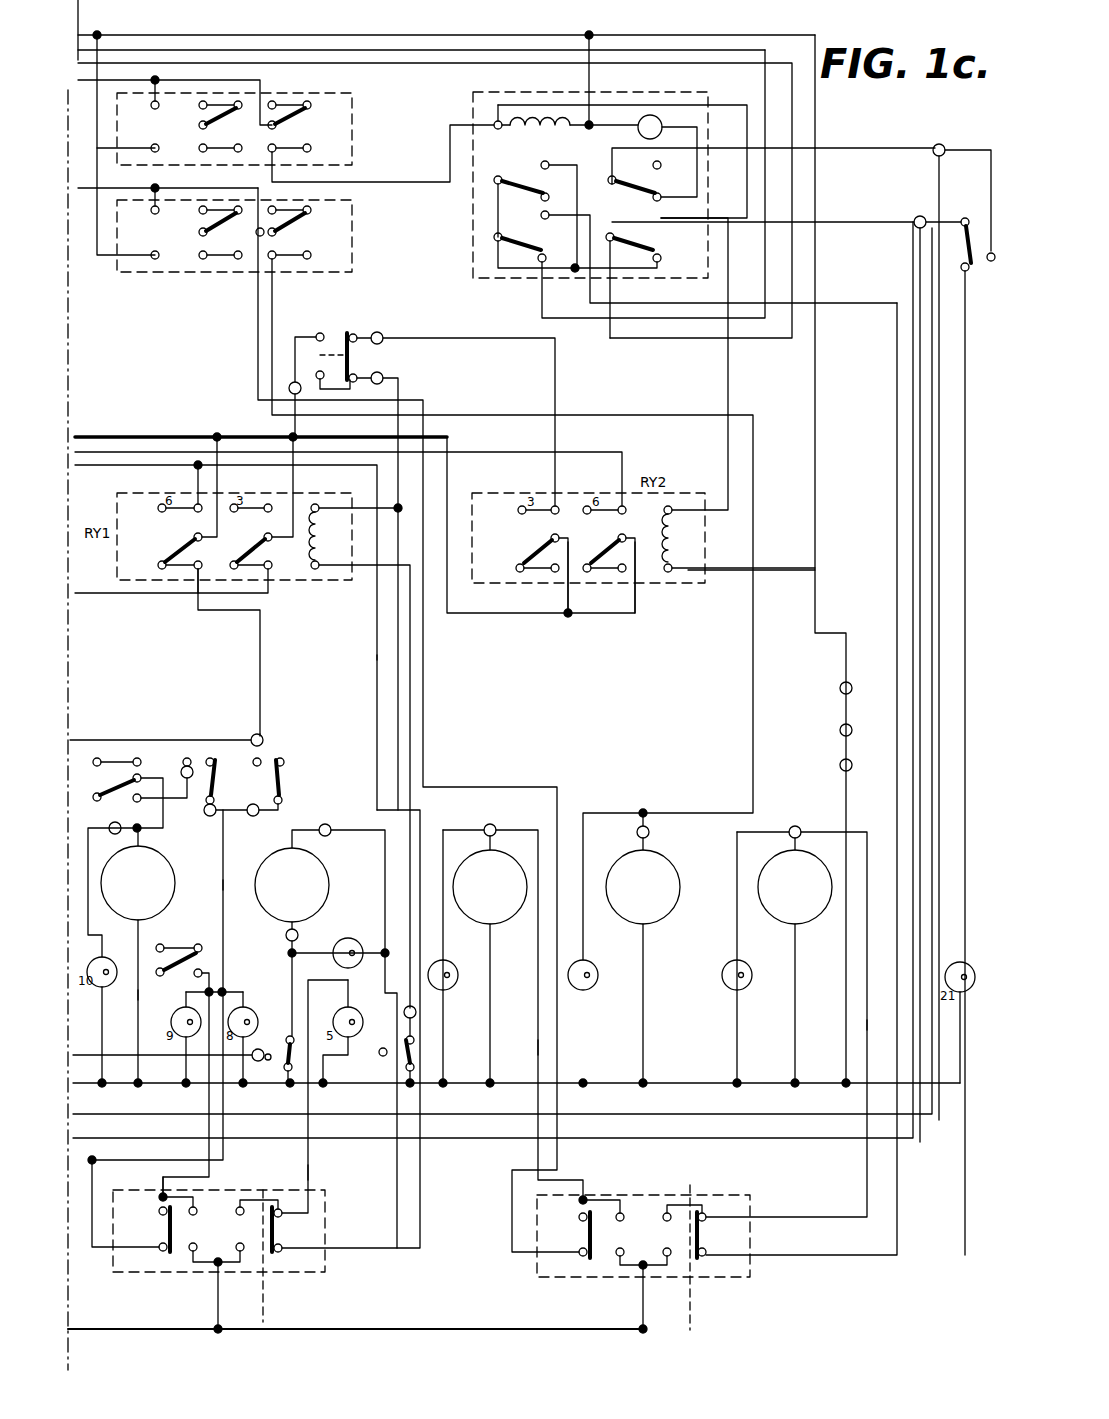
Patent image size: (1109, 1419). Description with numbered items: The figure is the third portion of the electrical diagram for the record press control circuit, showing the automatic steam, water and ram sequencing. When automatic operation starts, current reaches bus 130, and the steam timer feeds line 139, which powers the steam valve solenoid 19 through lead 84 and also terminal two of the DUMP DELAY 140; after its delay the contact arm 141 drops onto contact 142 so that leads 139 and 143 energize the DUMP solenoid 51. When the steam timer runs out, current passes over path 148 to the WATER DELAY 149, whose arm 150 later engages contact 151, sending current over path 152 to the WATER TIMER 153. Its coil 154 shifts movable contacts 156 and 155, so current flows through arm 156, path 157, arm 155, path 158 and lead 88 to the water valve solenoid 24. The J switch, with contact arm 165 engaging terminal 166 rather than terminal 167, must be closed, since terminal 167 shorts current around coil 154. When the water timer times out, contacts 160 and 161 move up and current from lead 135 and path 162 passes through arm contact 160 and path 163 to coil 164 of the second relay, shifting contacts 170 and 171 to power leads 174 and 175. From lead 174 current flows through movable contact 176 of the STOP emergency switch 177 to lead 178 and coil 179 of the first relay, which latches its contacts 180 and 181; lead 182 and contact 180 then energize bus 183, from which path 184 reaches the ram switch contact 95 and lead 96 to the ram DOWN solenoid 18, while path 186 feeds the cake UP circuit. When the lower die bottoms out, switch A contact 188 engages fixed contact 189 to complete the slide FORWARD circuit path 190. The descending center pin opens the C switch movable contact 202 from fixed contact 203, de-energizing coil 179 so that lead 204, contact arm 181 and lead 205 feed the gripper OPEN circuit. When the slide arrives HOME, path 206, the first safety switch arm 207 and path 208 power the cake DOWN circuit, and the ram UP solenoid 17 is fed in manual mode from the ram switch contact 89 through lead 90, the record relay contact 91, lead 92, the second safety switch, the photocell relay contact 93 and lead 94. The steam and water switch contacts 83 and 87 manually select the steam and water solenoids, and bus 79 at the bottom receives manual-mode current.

The path 148 is at (138, 80).
The lead 135 is at (438, 50).
The path 162 is at (792, 118).
The WATER DELAY 149 is at (352, 97).
The arm 150 is at (300, 112).
The contact 151 is at (311, 148).
The path 152 is at (365, 182).
The DUMP DELAY 140 is at (352, 272).
The contact arm 141 is at (300, 222).
The contact 142 is at (302, 258).
The path 139 is at (258, 192).
The lead 143 is at (272, 296).
The WATER TIMER 153 is at (732, 186).
The coil 154 is at (545, 133).
The movable contact 156 is at (498, 185).
The movable contact 155 is at (505, 245).
The path 157 is at (580, 203).
The contact 161 is at (648, 184).
The contact 160 is at (652, 244).
The contact arm 165 is at (963, 240).
The terminal 166 is at (961, 268).
The terminal 167 is at (989, 262).
The path 158 is at (830, 303).
The path 163 is at (728, 392).
The STOP emergency switch 177 is at (401, 410).
The movable contact 176 is at (352, 352).
The lead 174 is at (495, 338).
The lead 178 is at (398, 385).
The bus 130 is at (175, 437).
The lead 175 is at (622, 460).
The bus 183 is at (150, 468).
The lead 182 is at (217, 482).
The lead 204 is at (293, 480).
The movable contact 180 is at (193, 536).
The movable contact 181 is at (262, 545).
The coil 179 is at (330, 560).
The lead 205 is at (108, 593).
The current path 184 is at (377, 658).
The path 206 is at (260, 684).
The movable contact 171 is at (540, 550).
The movable contact 170 is at (612, 548).
The coil 164 is at (676, 548).
The contact 93 is at (210, 750).
The E1 switch arm 207 is at (284, 766).
The path 208 is at (223, 842).
The lead 92 is at (223, 886).
The UP solenoid 17 is at (155, 850).
The lead 94 is at (140, 994).
The contact 91 is at (170, 966).
The DOWN solenoid 18 is at (330, 886).
The contact 188 is at (283, 1050).
The lead 96 is at (310, 1172).
The fixed contact 189 is at (258, 1062).
The slide FORWARD circuit path 190 is at (158, 1058).
The fixed contact 203 is at (414, 1035).
The movable contact 202 is at (415, 1058).
The steam valve solenoid 19 is at (495, 922).
The lead 84 is at (538, 1050).
The DUMP solenoid 51 is at (650, 922).
The water valve solenoid 24 is at (800, 922).
The lead 88 is at (867, 1025).
The current path 186 is at (345, 1083).
The movable contact 89 is at (166, 1230).
The lead 90 is at (163, 1177).
The movable contact 95 is at (276, 1232).
The movable contact 83 is at (588, 1238).
The movable contact 87 is at (700, 1240).
The bus 79 is at (395, 1329).